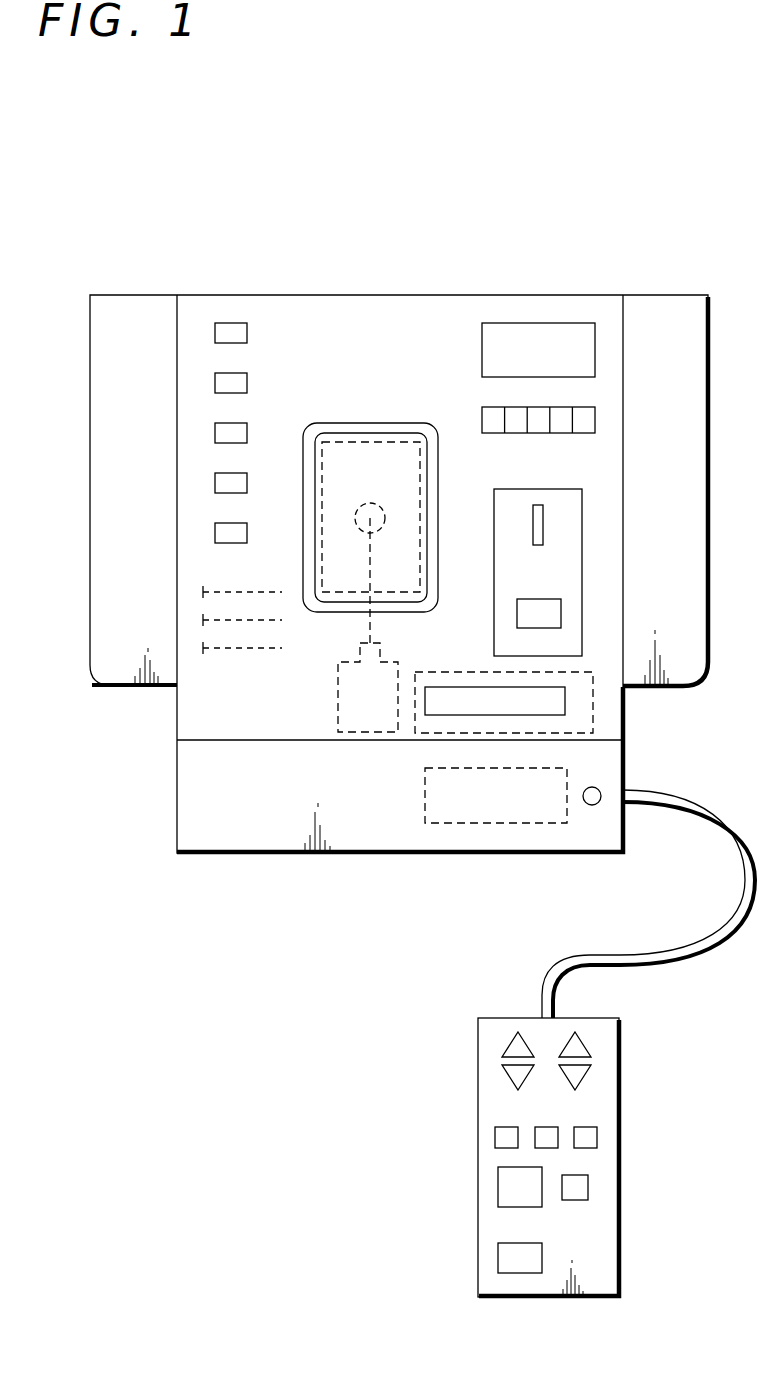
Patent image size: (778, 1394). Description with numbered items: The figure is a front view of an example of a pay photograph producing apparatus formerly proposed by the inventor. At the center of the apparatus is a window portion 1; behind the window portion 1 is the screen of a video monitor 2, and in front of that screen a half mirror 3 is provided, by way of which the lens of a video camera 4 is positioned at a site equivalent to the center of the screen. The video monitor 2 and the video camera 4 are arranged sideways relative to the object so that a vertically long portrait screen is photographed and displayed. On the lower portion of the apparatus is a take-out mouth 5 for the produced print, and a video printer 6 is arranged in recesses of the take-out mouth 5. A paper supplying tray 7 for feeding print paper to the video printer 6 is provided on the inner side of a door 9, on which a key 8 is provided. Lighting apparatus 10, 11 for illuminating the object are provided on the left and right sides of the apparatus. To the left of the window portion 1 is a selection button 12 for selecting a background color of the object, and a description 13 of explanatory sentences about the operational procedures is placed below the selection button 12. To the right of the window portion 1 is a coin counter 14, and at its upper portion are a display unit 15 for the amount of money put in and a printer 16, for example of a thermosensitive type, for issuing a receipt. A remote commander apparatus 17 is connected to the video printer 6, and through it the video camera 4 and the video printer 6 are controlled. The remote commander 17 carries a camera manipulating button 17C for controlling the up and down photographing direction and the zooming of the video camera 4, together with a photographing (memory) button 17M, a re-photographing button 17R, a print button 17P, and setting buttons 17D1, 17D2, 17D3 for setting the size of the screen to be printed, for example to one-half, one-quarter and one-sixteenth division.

The window portion 1 is at (327, 423).
The video monitor 2 is at (366, 441).
The half mirror 3 is at (438, 470).
The video camera 4 is at (370, 725).
The take-out mouth 5 is at (565, 697).
The video printer 6 is at (593, 715).
The paper supplying tray 7 is at (448, 823).
The key 8 is at (592, 805).
The door 9 is at (245, 854).
The lighting apparatus 10 is at (113, 304).
The lighting apparatus 11 is at (663, 302).
The selection button 12 is at (240, 323).
The description 13 is at (238, 634).
The coin counter 14 is at (582, 551).
The display unit 15 is at (595, 423).
The printer 16 is at (595, 355).
The remote commander apparatus 17 is at (500, 1297).
The camera manipulating button 17C is at (597, 1048).
The setting button 17D1 is at (495, 1137).
The setting button 17D2 is at (548, 1148).
The setting button 17D3 is at (597, 1137).
The photographing (memory) button 17M is at (498, 1190).
The re-photographing button 17R is at (588, 1190).
The print button 17P is at (542, 1260).